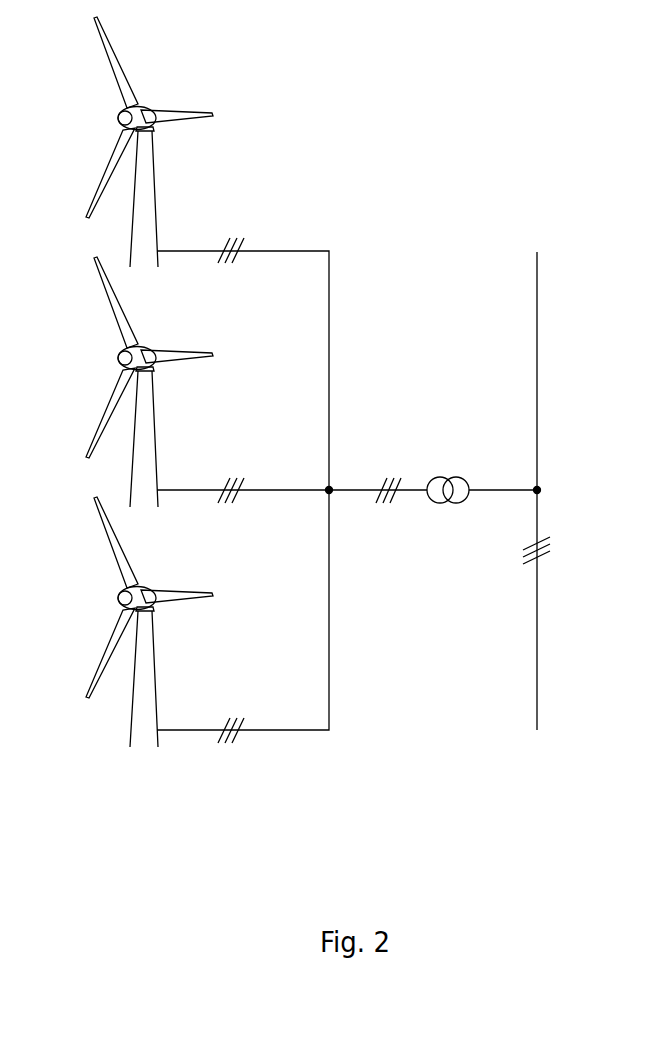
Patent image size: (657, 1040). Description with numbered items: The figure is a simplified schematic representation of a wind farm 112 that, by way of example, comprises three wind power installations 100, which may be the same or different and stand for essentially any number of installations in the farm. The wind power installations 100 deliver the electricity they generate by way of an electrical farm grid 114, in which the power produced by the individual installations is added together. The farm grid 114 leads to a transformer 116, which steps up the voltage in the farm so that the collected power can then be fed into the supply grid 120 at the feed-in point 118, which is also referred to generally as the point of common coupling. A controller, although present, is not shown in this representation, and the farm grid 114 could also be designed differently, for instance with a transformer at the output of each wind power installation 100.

The wind power installation 100 is at (147, 187).
The wind farm 112 is at (388, 116).
The electrical farm grid 114 is at (345, 489).
The transformer 116 is at (449, 470).
The feed-in point 118 is at (546, 476).
The supply grid 120 is at (538, 278).